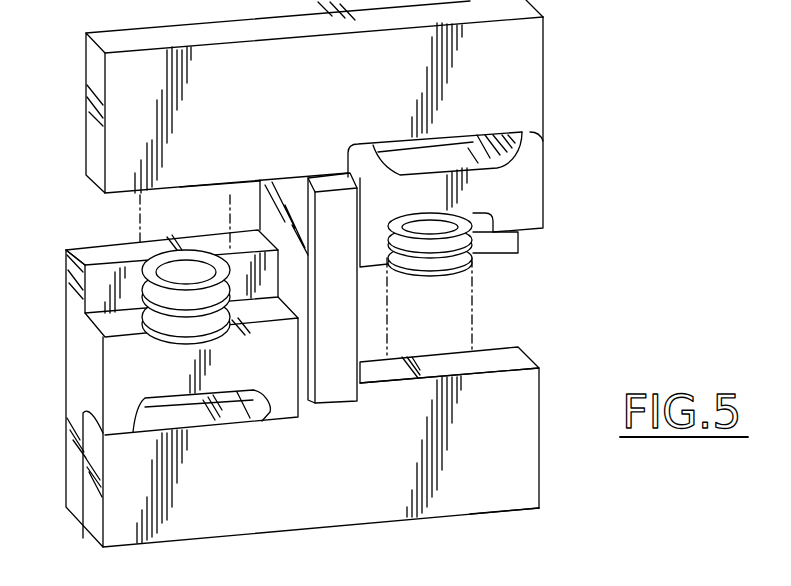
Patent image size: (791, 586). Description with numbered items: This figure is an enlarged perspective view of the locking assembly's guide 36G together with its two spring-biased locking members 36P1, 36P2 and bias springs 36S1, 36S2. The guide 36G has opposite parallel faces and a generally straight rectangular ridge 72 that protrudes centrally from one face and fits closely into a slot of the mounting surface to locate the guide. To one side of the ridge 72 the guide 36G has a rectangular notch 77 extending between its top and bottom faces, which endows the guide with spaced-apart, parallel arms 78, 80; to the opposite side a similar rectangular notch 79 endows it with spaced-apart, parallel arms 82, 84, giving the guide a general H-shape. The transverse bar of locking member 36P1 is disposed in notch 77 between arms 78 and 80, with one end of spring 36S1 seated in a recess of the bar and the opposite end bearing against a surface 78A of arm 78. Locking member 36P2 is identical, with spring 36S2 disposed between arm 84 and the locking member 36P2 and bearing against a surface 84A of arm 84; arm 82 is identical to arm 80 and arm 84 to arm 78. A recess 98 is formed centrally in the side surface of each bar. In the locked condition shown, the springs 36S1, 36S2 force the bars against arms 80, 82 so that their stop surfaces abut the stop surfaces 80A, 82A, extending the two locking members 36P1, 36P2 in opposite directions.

The arm 84 is at (92, 75).
The arm 80 is at (530, 70).
The recess 98 is at (450, 153).
The stop surface 80A is at (543, 138).
The surface 84A is at (207, 193).
The rectangular notch 79 is at (125, 213).
The locking member 36P2 is at (64, 249).
The locking member 36P1 is at (537, 231).
The bias spring 36S1 is at (465, 258).
The bias spring 36S2 is at (142, 340).
The rectangular notch 77 is at (513, 305).
The surface 78A is at (518, 357).
The arm 78 is at (527, 417).
The guide 36G is at (541, 508).
The ridge 72 is at (333, 372).
The stop surface 82A is at (190, 415).
The arm 82 is at (96, 527).